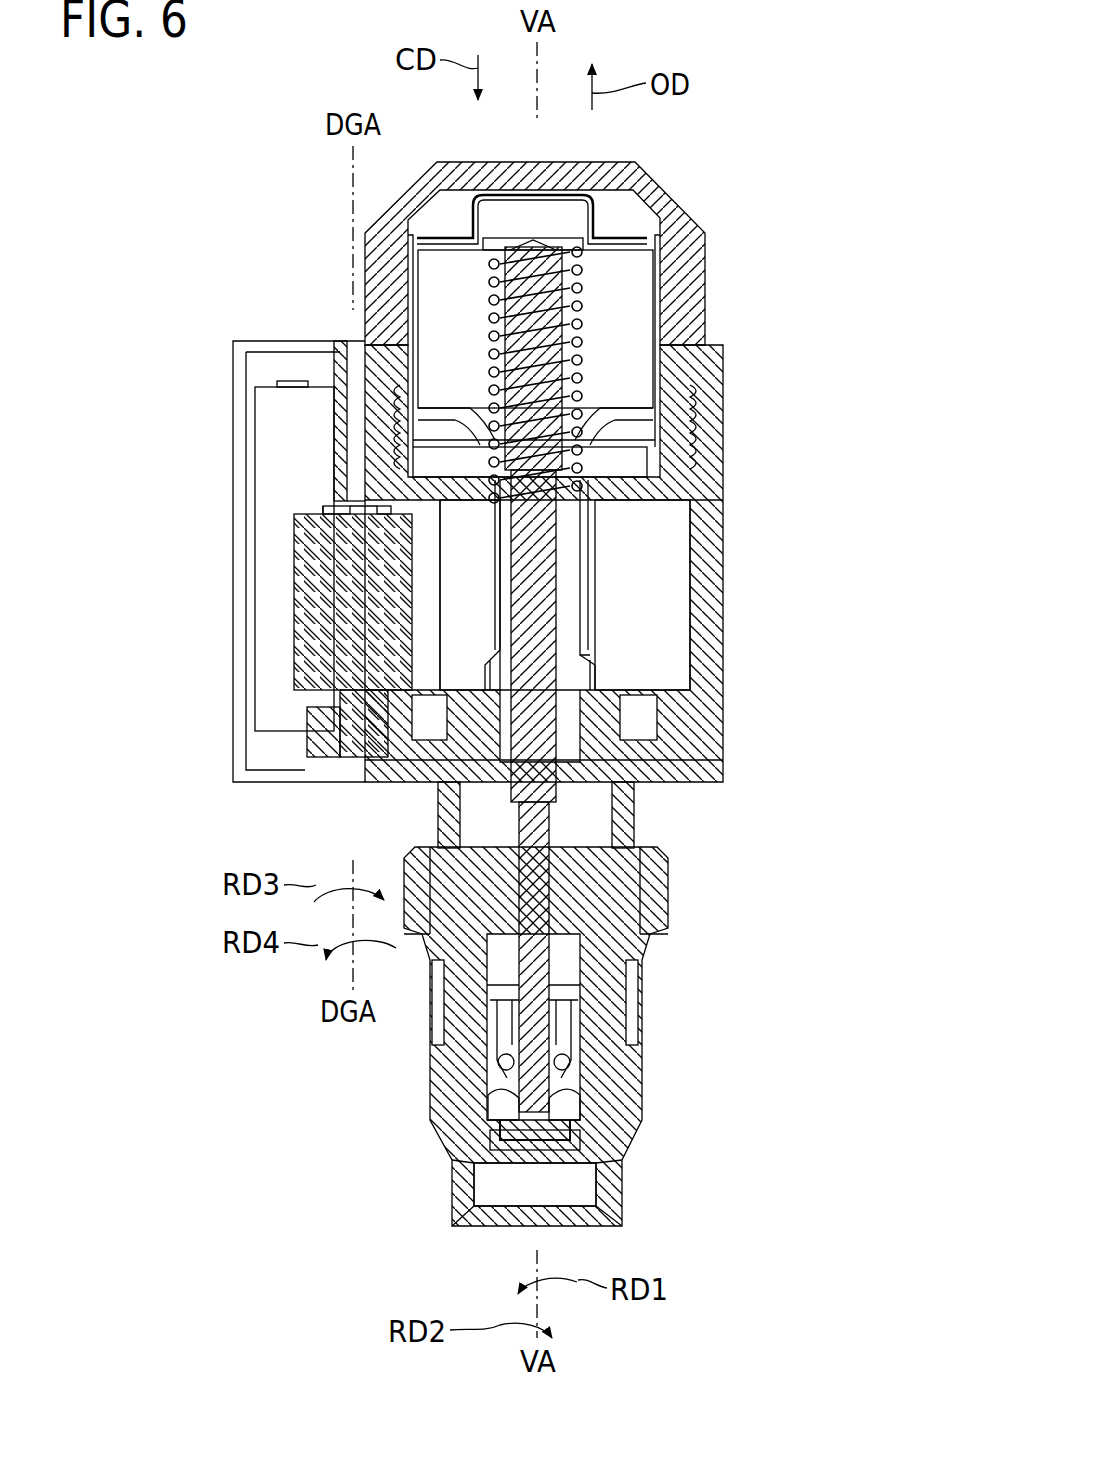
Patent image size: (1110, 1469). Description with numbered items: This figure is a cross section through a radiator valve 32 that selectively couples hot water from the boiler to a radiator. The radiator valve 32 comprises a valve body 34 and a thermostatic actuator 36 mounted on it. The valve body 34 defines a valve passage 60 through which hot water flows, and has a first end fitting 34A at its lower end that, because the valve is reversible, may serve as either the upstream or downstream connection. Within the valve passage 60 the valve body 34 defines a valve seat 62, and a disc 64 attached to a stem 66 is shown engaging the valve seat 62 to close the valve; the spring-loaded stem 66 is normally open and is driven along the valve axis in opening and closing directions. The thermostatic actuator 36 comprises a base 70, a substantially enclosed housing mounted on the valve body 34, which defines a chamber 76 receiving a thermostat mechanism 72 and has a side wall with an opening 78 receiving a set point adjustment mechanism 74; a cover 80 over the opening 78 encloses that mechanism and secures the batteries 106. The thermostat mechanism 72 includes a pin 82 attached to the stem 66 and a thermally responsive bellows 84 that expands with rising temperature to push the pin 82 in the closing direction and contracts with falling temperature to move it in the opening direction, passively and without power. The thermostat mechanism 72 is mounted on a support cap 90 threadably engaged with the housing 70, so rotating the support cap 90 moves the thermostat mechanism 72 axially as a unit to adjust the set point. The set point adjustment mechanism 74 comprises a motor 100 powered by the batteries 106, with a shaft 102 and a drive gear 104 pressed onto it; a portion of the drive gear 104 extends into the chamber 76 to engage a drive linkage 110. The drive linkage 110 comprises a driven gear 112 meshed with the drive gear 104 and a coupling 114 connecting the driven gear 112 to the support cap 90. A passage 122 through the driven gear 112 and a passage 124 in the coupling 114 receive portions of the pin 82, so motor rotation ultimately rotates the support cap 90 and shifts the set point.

The radiator valve 32 is at (158, 1088).
The valve body 34 is at (640, 1092).
The first end fitting 34A is at (560, 1218).
The thermostatic actuator 36 is at (766, 534).
The valve passage 60 is at (535, 1185).
The valve seat 62 is at (492, 1120).
The disc 64 is at (528, 1108).
The stem 66 is at (515, 1078).
The base 70 is at (724, 452).
The thermostat mechanism 72 is at (670, 321).
The set point adjustment mechanism 74 is at (302, 764).
The chamber 76 is at (662, 650).
The opening 78 is at (345, 510).
The cover 80 is at (237, 737).
The pin 82 is at (558, 592).
The bellows 84 is at (580, 286).
The support cap 90 is at (655, 192).
The motor 100 is at (293, 642).
The shaft 102 is at (350, 752).
The drive gear 104 is at (330, 758).
The batteries 106 is at (270, 522).
The drive linkage 110 is at (656, 611).
The driven gear 112 is at (603, 681).
The coupling 114 is at (598, 544).
The passage 122 is at (502, 636).
The passage 124 is at (502, 545).